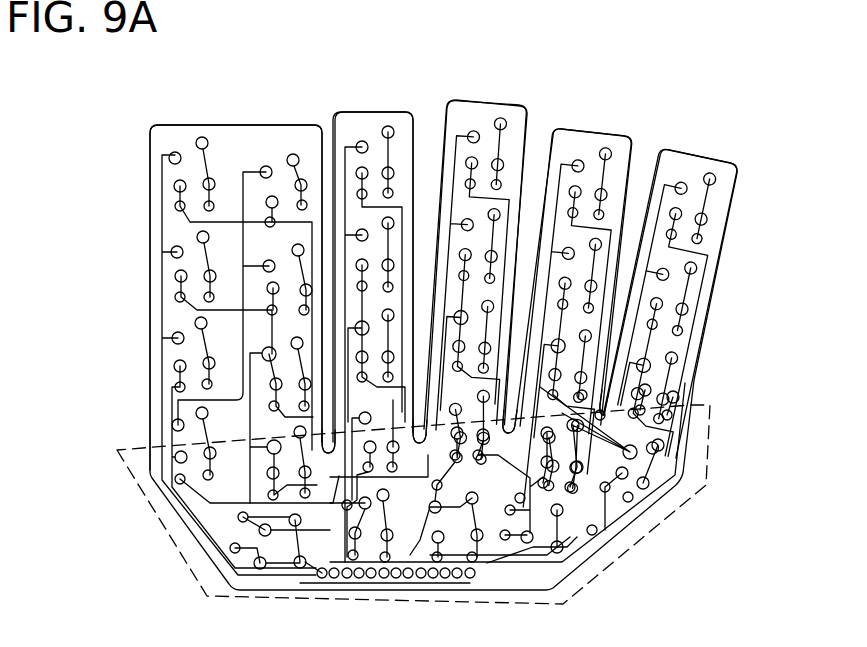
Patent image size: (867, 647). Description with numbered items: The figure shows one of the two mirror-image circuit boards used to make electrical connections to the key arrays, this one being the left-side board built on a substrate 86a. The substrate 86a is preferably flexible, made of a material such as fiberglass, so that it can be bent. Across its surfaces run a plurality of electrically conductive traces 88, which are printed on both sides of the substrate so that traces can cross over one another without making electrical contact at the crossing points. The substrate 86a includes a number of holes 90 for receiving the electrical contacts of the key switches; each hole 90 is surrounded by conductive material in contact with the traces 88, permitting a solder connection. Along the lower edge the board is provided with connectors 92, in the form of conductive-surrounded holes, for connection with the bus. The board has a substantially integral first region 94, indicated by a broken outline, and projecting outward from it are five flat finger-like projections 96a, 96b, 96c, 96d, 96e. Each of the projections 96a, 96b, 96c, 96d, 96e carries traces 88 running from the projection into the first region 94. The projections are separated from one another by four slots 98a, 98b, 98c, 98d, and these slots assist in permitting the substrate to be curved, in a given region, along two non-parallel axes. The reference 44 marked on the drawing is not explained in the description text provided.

The flexible circuit board 44 is at (160, 133).
The electrically conductive traces 88 is at (160, 185).
The holes 90 is at (204, 137).
The connectors 92 is at (322, 578).
The first region 94 is at (683, 507).
The substrate 86a is at (520, 582).
The flat finger-like projection 96a is at (300, 125).
The flat finger-like projection 96b is at (400, 112).
The flat finger-like projection 96c is at (515, 108).
The flat finger-like projection 96d is at (625, 140).
The flat finger-like projection 96e is at (733, 165).
The slot 98a is at (332, 120).
The slot 98b is at (445, 112).
The slot 98c is at (556, 135).
The slot 98d is at (660, 150).